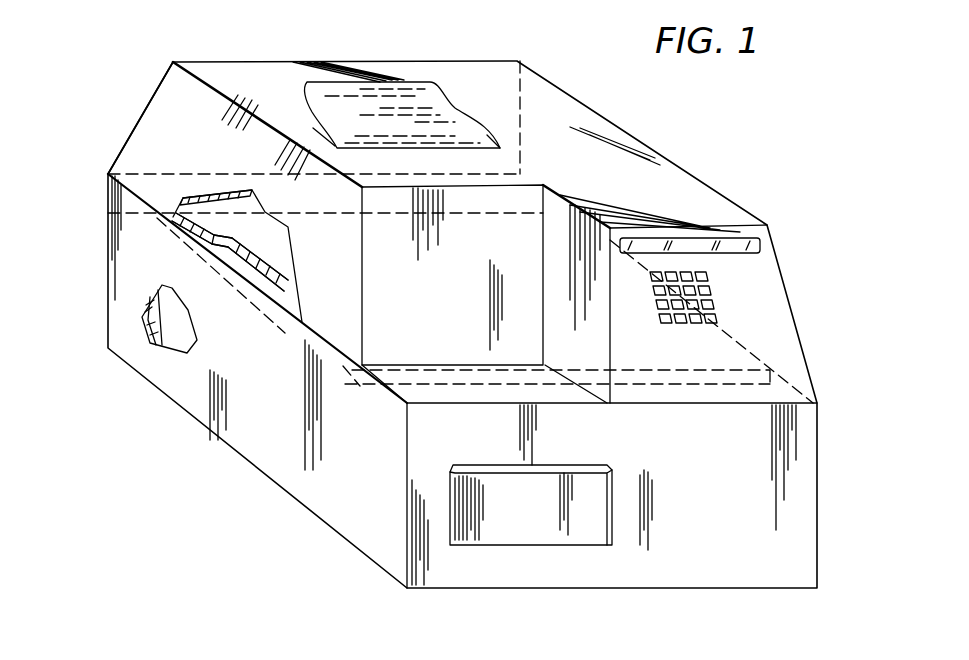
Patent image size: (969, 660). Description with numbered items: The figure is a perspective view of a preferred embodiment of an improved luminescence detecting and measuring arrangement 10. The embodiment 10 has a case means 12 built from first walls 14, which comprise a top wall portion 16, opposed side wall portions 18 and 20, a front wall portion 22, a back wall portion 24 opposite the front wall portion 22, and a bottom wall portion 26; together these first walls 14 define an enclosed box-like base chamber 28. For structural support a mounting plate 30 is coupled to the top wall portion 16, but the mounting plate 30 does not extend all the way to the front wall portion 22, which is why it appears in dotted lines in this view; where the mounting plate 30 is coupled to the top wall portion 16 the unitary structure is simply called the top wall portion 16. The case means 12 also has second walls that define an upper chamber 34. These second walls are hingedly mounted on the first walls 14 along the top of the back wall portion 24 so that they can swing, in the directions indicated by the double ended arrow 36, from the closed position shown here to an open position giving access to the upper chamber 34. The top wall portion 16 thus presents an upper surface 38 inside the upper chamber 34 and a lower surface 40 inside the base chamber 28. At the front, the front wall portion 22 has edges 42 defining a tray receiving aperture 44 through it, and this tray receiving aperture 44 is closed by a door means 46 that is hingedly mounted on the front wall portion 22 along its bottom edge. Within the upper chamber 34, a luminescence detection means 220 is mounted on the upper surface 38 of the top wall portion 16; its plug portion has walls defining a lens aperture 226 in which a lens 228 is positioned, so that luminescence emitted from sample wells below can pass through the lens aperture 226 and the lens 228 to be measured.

The luminescence detecting and measuring arrangement 10 is at (775, 108).
The case means 12 is at (98, 228).
The first walls 14 is at (255, 447).
The top wall portion 16 is at (185, 200).
The side wall portion 18 is at (327, 490).
The side wall portion 20 is at (818, 510).
The front wall portion 22 is at (728, 550).
The back wall portion 24 is at (100, 303).
The bottom wall portion 26 is at (357, 547).
The base chamber 28 is at (167, 332).
The mounting plate 30 is at (215, 252).
The upper chamber 34 is at (244, 214).
The double ended arrow 36 is at (762, 148).
The upper surface 38 is at (277, 258).
The lower surface 40 is at (275, 295).
The edges 42 is at (448, 508).
The tray receiving aperture 44 is at (447, 510).
The door means 46 is at (531, 505).
The luminescence detection means 220 is at (445, 100).
The lens aperture 226 is at (723, 305).
The lens 228 is at (760, 246).